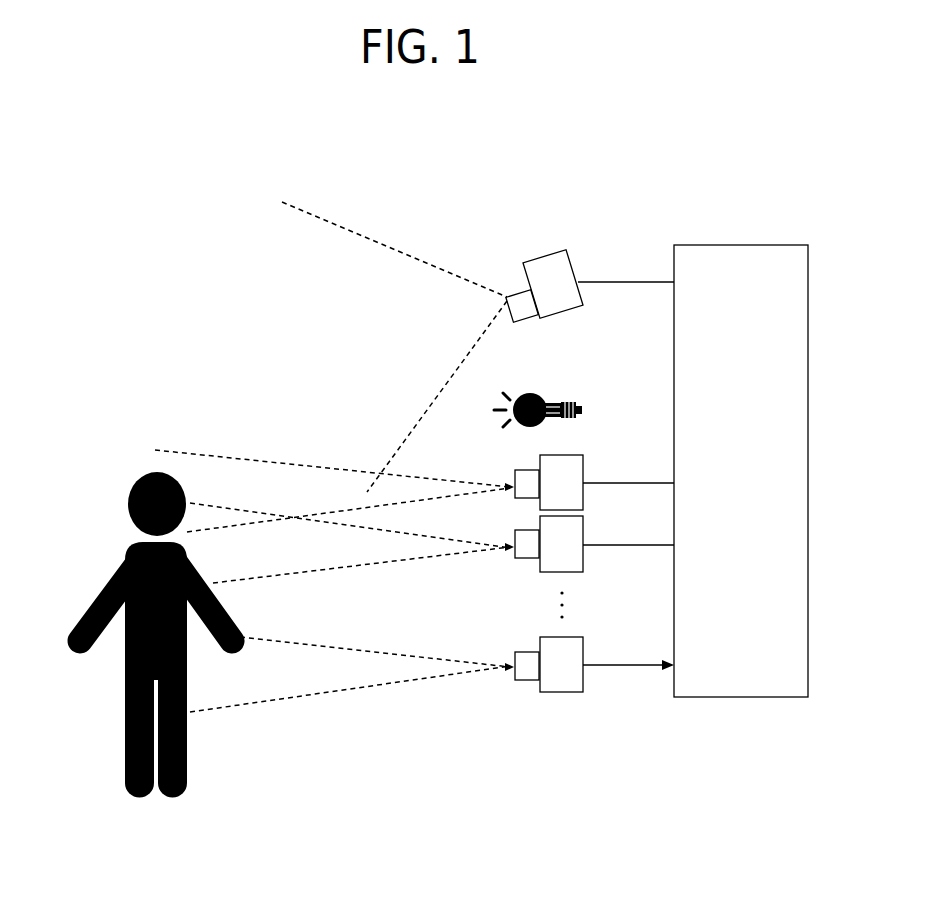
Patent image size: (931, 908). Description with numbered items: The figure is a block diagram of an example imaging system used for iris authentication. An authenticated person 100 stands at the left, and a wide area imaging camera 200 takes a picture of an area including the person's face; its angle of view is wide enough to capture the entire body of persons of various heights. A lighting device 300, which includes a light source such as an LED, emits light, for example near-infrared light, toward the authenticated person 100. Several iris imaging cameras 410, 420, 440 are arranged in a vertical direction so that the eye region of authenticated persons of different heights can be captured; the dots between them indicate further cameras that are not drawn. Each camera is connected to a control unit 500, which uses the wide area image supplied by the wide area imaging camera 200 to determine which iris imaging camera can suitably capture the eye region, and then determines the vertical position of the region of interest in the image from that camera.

The authenticated person 100 is at (130, 494).
The wide area imaging camera 200 is at (547, 256).
The lighting device 300 is at (537, 394).
The iris imaging camera 410 is at (578, 455).
The iris imaging camera 420 is at (577, 572).
The iris imaging camera 440 is at (576, 692).
The control unit 500 is at (760, 244).